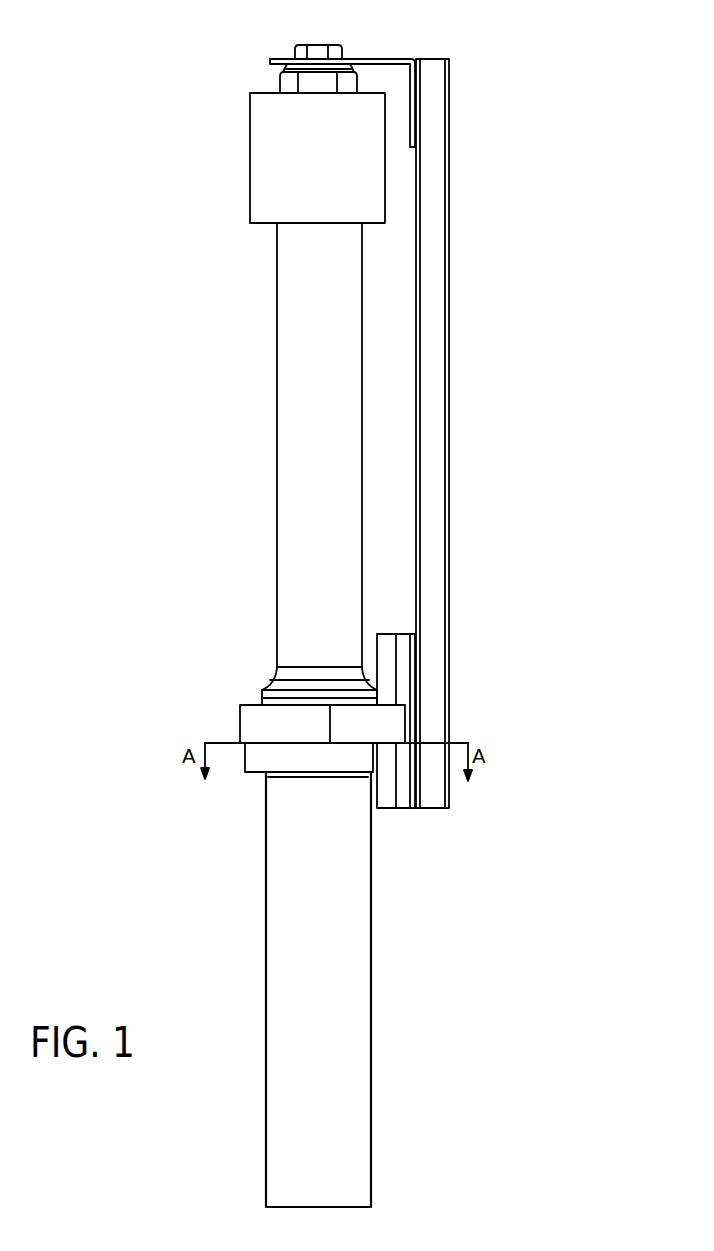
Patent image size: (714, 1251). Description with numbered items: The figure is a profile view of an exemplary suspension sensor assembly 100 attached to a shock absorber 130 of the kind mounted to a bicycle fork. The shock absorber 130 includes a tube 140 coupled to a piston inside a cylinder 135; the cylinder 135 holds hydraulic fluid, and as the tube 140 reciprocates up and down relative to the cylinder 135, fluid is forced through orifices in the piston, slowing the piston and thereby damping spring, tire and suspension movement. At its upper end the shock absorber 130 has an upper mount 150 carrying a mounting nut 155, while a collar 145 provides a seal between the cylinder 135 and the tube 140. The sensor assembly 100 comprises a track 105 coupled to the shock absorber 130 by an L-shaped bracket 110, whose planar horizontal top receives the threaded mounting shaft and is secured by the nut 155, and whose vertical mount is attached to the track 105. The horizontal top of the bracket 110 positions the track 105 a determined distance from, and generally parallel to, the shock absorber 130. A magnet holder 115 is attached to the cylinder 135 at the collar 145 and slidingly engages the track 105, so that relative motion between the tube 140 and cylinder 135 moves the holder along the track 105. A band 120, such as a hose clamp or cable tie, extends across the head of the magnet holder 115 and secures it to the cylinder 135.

The suspension sensor assembly 100 is at (473, 307).
The track 105 is at (446, 418).
The bracket 110 is at (387, 60).
The magnet holder 115 is at (398, 810).
The band 120 is at (375, 722).
The shock absorber 130 is at (235, 907).
The cylinder 135 is at (337, 938).
The tube 140 is at (333, 505).
The collar 145 is at (260, 700).
The upper mount 150 is at (290, 158).
The mounting nut 155 is at (315, 46).